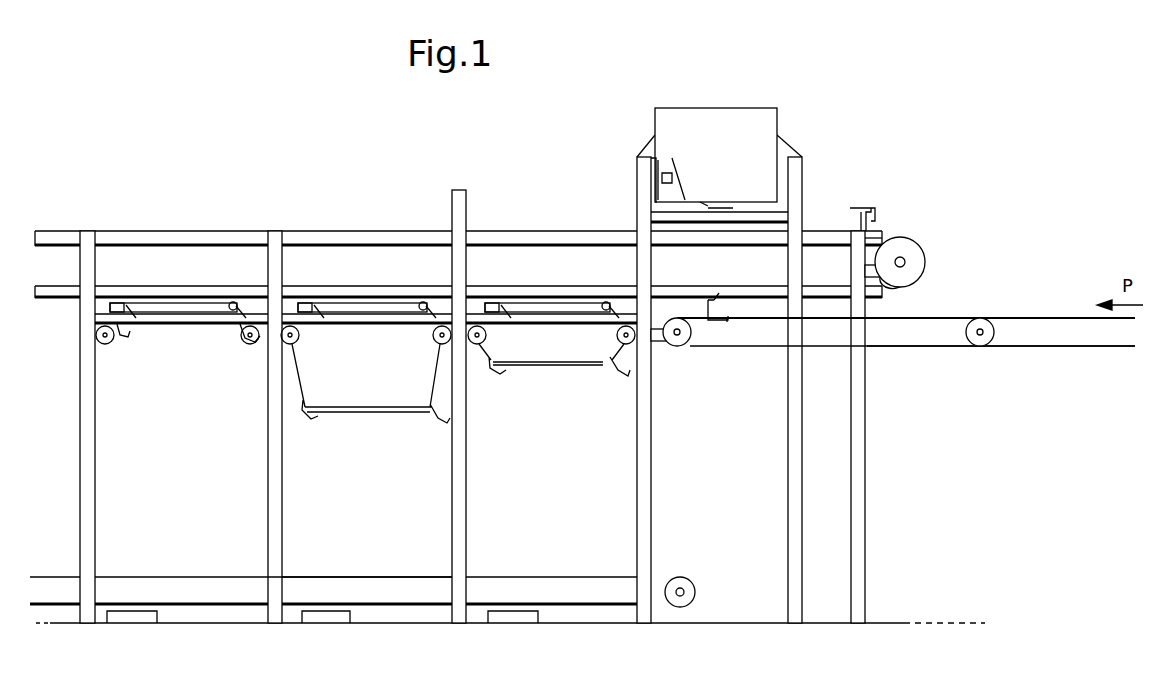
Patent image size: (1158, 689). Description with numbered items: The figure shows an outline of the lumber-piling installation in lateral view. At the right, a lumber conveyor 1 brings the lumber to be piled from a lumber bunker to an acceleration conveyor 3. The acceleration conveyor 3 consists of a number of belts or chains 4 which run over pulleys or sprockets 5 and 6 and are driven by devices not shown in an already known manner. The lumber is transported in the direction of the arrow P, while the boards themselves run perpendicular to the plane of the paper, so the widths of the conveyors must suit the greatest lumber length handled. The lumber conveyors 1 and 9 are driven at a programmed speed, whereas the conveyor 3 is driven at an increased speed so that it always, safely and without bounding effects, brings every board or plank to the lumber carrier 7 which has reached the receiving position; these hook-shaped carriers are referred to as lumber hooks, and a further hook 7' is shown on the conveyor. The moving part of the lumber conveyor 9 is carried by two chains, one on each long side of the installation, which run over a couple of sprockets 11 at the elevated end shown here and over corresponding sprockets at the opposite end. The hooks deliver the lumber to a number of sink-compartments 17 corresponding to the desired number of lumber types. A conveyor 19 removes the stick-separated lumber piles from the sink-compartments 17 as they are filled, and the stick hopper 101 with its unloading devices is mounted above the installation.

The lumber conveyor 1 is at (1070, 333).
The acceleration conveyor 3 is at (918, 330).
The belts or chains 4 is at (955, 318).
The pulleys or sprockets 5 is at (683, 347).
The pulleys or sprockets 6 is at (983, 321).
The lumber carrier (lumber hook) 7 is at (871, 198).
The lumber hook 7' is at (735, 342).
The lumber conveyor 9 is at (583, 237).
The sprockets 11 is at (905, 252).
The sink-compartment 17 is at (193, 530).
The conveyor 19 is at (373, 592).
The stick hopper 101 is at (786, 121).